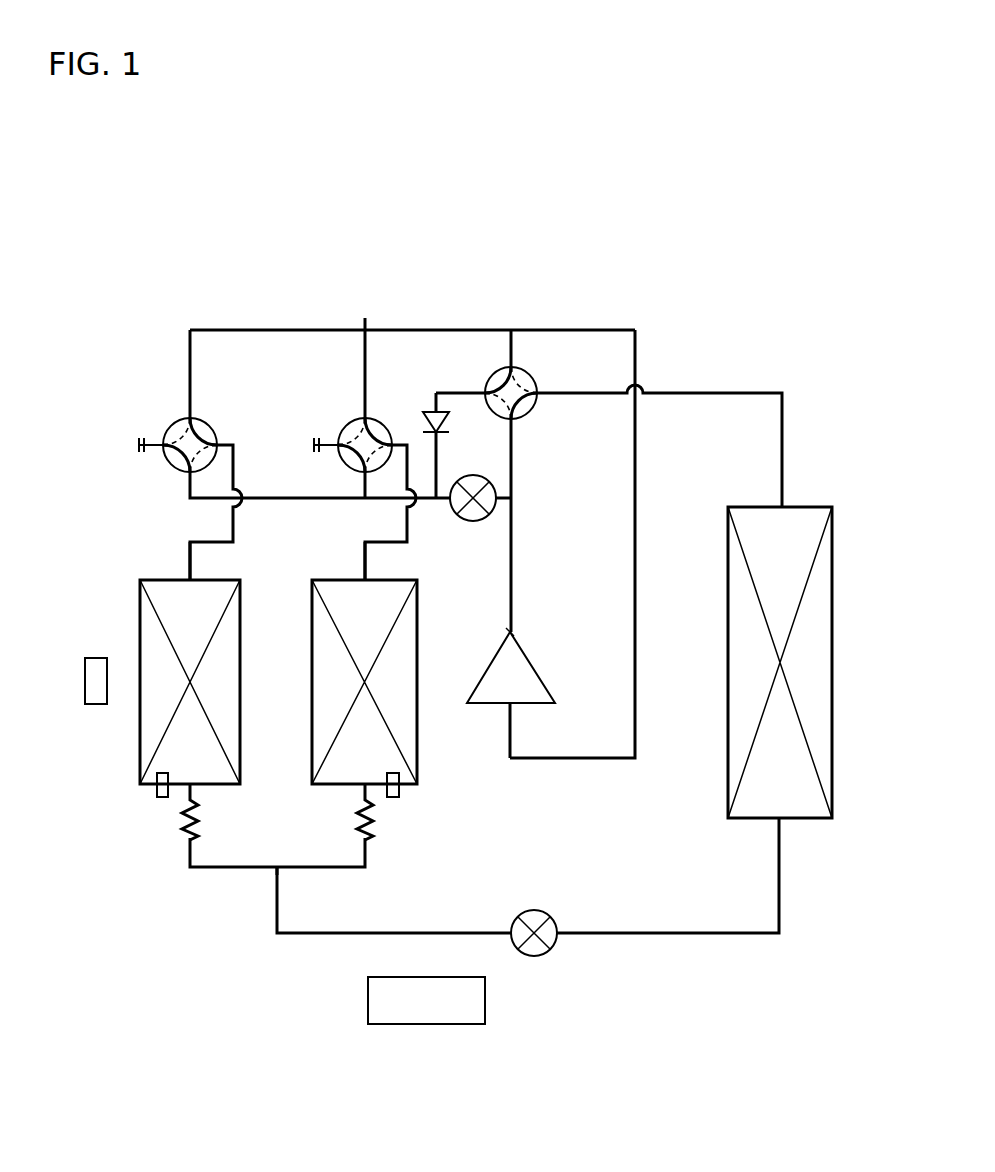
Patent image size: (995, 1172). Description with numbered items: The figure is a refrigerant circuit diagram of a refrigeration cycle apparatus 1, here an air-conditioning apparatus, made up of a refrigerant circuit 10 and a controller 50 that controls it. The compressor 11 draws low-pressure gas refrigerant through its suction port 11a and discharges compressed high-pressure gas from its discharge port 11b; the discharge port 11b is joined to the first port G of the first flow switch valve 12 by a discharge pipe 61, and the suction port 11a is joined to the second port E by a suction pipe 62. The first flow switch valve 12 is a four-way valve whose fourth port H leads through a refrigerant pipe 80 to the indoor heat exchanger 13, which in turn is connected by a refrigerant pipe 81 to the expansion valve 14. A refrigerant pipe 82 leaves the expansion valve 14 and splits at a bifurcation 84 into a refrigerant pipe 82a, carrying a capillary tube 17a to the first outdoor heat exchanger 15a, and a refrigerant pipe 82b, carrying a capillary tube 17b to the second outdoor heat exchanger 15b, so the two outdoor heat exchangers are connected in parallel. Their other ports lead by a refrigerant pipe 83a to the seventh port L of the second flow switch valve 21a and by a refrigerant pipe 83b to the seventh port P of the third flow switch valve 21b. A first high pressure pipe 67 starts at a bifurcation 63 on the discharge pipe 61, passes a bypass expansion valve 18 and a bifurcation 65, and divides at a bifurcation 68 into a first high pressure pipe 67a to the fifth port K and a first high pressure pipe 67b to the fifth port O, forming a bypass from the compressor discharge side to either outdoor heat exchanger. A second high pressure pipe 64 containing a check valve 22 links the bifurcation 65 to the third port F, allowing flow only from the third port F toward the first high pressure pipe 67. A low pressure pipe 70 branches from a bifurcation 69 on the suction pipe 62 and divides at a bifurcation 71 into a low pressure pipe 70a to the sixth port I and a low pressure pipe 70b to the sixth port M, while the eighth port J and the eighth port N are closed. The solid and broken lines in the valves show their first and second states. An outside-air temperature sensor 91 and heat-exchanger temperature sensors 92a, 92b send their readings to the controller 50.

The refrigeration cycle apparatus 1 is at (534, 1058).
The refrigerant circuit 10 is at (700, 393).
The compressor 11 is at (530, 658).
The suction port 11a is at (504, 705).
The discharge port 11b is at (509, 632).
The first flow switch valve 12 is at (488, 388).
The indoor heat exchanger 13 is at (796, 507).
The expansion valve 14 is at (537, 906).
The first outdoor heat exchanger 15a is at (162, 572).
The second outdoor heat exchanger 15b is at (339, 572).
The capillary tube 17a is at (178, 825).
The capillary tube 17b is at (352, 817).
The bypass expansion valve 18 is at (472, 522).
The second flow switch valve 21a is at (169, 429).
The third flow switch valve 21b is at (342, 429).
The check valve 22 is at (424, 404).
The controller 50 is at (368, 1005).
The discharge pipe 61 is at (511, 540).
The suction pipe 62 is at (635, 479).
The bifurcation 63 is at (512, 498).
The second high pressure pipe 64 is at (436, 441).
The bifurcation 65 is at (436, 500).
The first high pressure pipe 67 is at (442, 500).
The first high pressure pipe 67a is at (266, 498).
The first high pressure pipe 67b is at (365, 493).
The bifurcation 68 is at (365, 498).
The bifurcation 69 is at (511, 330).
The low pressure pipe 70 is at (446, 330).
The low pressure pipe 70a is at (189, 351).
The low pressure pipe 70b is at (364, 351).
The bifurcation 71 is at (366, 330).
The refrigerant pipe 80 is at (742, 393).
The refrigerant pipe 81 is at (686, 932).
The refrigerant pipe 82 is at (437, 932).
The refrigerant pipe 82a is at (213, 867).
The refrigerant pipe 82b is at (336, 867).
The refrigerant pipe 83a is at (233, 523).
The refrigerant pipe 83b is at (365, 536).
The bifurcation 84 is at (277, 867).
The outside-air temperature sensor 91 is at (96, 704).
The heat-exchanger temperature sensor 92a is at (156, 794).
The heat-exchanger temperature sensor 92b is at (400, 790).
The second port E is at (510, 366).
The third port F is at (484, 396).
The first port G is at (512, 420).
The fourth port H is at (538, 393).
The sixth port I is at (187, 420).
The eighth port J is at (161, 446).
The fifth port K is at (192, 469).
The seventh port L is at (219, 444).
The sixth port M is at (364, 420).
The eighth port N is at (336, 446).
The fifth port O is at (365, 469).
The seventh port P is at (394, 446).